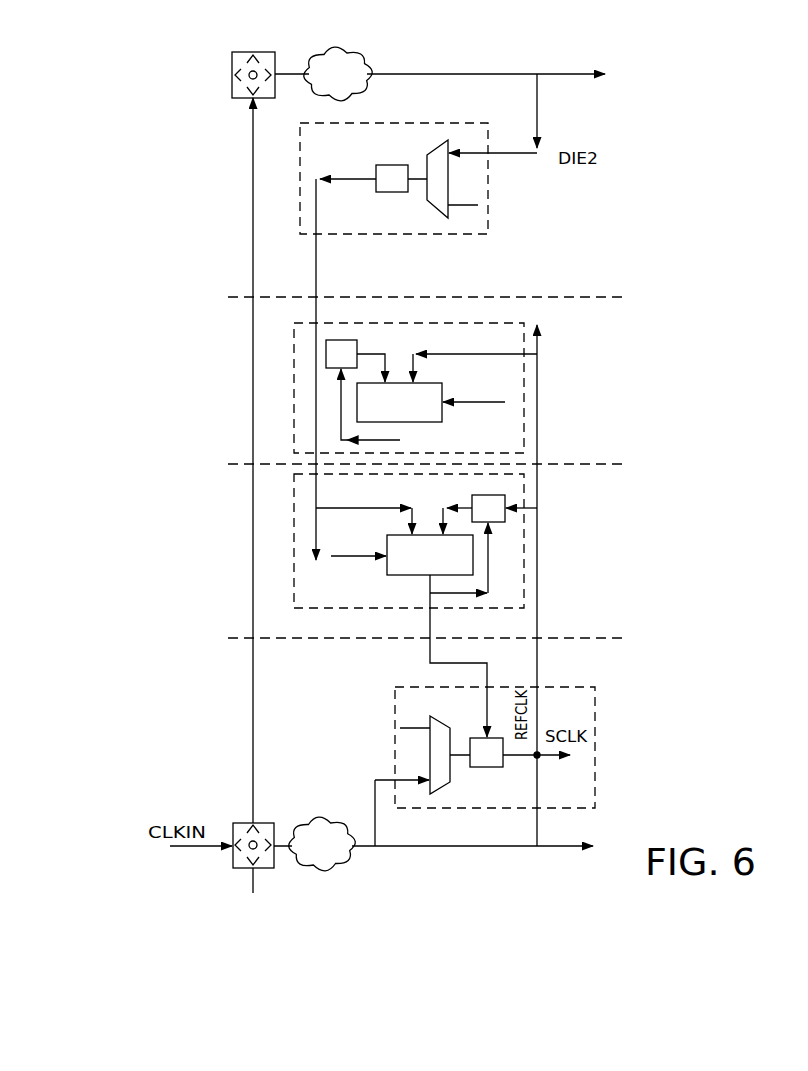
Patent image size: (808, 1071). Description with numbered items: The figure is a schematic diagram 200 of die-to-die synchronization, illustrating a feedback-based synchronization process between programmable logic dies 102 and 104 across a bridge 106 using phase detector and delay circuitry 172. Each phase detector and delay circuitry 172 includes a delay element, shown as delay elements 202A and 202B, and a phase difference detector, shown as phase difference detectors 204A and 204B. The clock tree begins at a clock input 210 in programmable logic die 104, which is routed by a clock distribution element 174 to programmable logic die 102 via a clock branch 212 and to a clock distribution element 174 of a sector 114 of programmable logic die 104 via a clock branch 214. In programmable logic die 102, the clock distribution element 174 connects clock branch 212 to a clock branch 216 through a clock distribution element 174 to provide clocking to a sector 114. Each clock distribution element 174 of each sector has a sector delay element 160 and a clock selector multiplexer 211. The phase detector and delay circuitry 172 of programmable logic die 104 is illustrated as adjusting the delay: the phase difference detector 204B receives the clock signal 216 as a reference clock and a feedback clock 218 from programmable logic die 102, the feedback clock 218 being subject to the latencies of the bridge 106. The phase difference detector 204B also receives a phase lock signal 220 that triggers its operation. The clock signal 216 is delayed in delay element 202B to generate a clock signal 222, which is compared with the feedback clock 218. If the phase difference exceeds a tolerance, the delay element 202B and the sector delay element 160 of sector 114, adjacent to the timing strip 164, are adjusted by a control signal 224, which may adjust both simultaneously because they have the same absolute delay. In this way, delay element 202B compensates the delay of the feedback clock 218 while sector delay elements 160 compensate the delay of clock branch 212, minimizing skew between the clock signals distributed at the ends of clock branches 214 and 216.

The diagram 200 is at (162, 82).
The programmable logic die 102 is at (650, 165).
The programmable logic die 104 is at (713, 668).
The bridge 106 is at (172, 478).
The sector 114 is at (637, 215).
The sector delay element 160 is at (398, 192).
The timing strip 164 is at (282, 378).
The phase detector and delay circuitry 172 is at (513, 323).
The clock distribution element 174 is at (232, 86).
The delay element 202A is at (345, 340).
The delay element 202B is at (488, 495).
The phase difference detector 204A is at (400, 383).
The phase difference detector 204B is at (408, 575).
The clock input 210 is at (175, 846).
The clock selector multiplexer 211 is at (437, 155).
The clock branch 212 is at (253, 790).
The clock branch 214 is at (410, 846).
The clock signal 216 is at (505, 74).
The feedback clock 218 is at (316, 309).
The phase lock signal 220 is at (350, 560).
The clock signal 222 is at (468, 502).
The control signal 224 is at (430, 620).